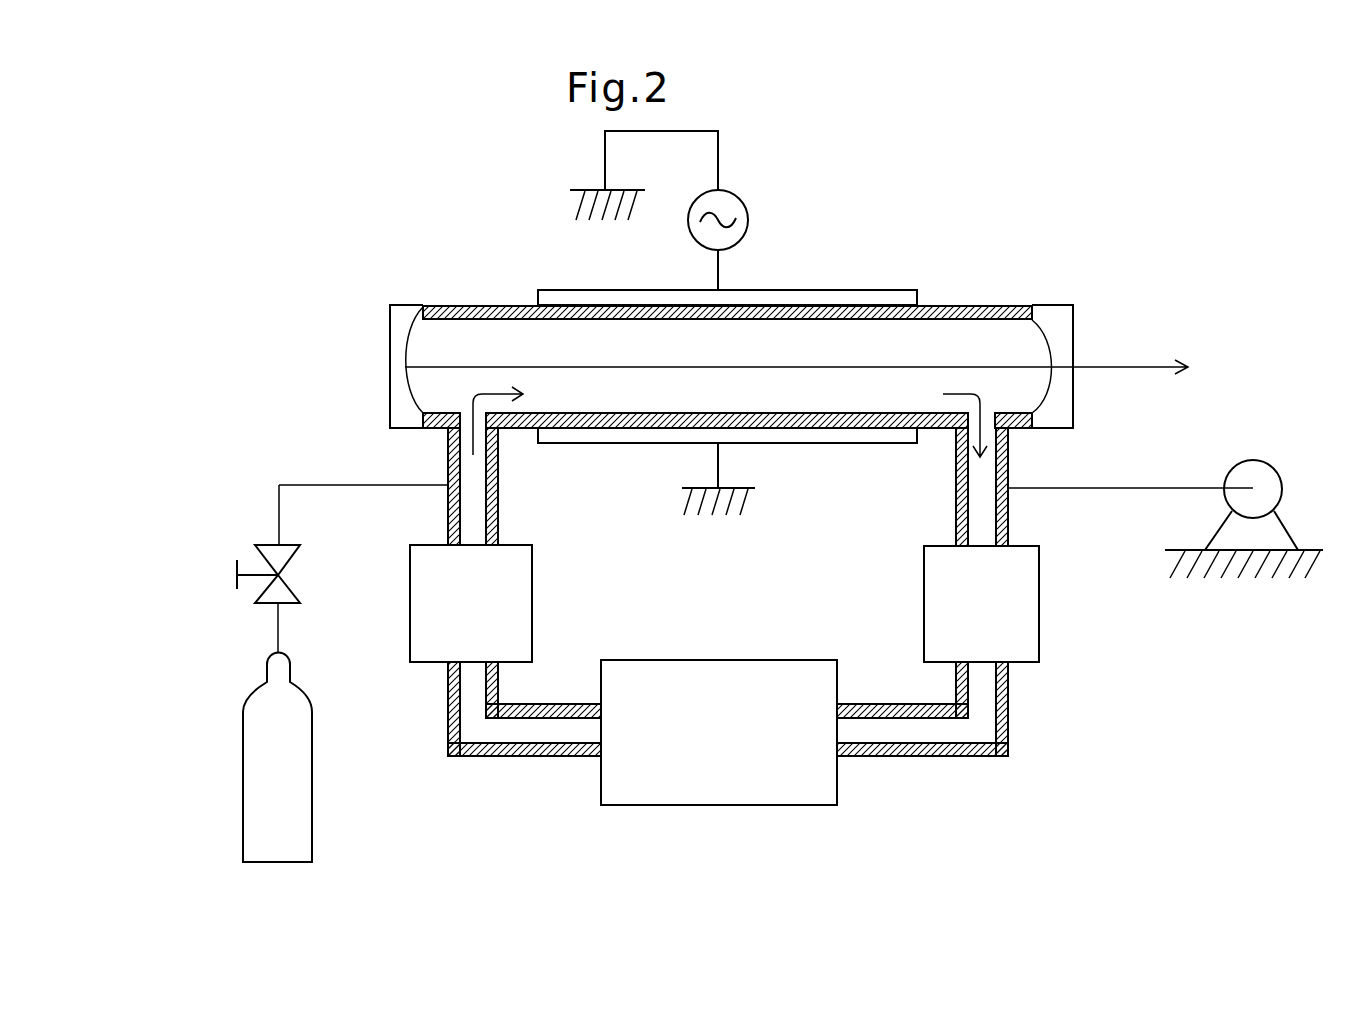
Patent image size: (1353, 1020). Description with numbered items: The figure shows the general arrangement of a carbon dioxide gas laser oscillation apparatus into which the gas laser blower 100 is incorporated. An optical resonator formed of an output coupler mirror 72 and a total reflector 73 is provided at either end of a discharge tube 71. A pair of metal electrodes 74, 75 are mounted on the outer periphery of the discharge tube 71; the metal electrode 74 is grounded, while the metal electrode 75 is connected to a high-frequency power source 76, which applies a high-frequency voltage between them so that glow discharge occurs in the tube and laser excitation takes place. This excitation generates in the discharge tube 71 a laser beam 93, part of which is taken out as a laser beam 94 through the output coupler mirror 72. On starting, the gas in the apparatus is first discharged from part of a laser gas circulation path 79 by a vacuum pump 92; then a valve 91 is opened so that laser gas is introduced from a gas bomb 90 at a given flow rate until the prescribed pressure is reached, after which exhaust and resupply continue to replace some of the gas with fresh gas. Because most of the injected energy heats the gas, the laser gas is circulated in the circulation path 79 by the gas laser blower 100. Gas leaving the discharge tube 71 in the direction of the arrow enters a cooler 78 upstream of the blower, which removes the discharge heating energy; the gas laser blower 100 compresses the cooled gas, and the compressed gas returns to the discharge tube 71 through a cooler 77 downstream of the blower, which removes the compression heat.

The discharge tube 71 is at (982, 306).
The output coupler mirror 72 is at (1075, 305).
The total reflector 73 is at (388, 310).
The metal electrode 74 is at (873, 444).
The metal electrode 75 is at (888, 292).
The high-frequency power source 76 is at (748, 232).
The cooler 77 is at (410, 640).
The cooler 78 is at (1040, 620).
The laser gas circulation path 79 is at (977, 723).
The gas bomb 90 is at (243, 797).
The valve 91 is at (233, 577).
The vacuum pump 92 is at (1248, 460).
The laser beam 93 is at (493, 367).
The laser beam 94 is at (1130, 367).
The gas laser blower 100 is at (728, 660).